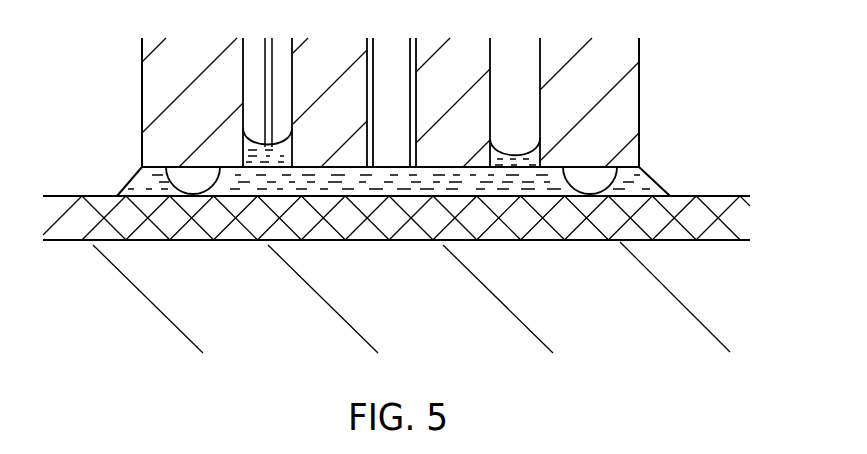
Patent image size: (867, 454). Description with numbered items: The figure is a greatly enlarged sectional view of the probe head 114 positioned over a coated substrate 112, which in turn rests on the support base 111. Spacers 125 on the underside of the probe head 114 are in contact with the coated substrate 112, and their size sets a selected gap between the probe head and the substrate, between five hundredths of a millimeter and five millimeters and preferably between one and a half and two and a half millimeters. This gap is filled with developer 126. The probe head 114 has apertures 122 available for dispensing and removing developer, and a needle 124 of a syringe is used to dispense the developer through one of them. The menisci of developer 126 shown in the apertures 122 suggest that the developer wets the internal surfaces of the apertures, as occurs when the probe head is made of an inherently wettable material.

The support base 111 is at (412, 317).
The coated substrate 112 is at (693, 240).
The probe head 114 is at (640, 66).
The apertures 122 is at (243, 100).
The needle 124 is at (265, 68).
The spacers 125 is at (162, 186).
The developer 126 is at (643, 168).